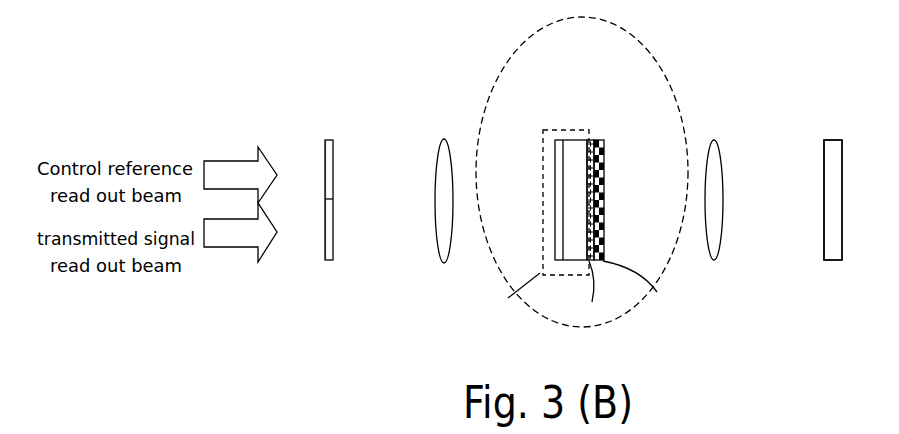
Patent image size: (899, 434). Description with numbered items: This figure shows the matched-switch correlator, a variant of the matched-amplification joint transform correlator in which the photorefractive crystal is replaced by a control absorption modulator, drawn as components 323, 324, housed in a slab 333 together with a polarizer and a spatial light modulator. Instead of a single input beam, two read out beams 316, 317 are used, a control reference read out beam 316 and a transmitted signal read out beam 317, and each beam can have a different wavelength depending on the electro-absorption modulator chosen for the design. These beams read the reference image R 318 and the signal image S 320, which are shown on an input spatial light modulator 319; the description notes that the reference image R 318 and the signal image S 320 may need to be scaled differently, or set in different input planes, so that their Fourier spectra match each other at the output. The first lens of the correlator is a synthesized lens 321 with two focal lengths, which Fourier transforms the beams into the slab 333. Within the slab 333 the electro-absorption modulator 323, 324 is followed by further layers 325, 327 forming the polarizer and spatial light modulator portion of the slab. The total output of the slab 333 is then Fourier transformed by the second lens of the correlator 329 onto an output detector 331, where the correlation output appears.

The read out beam 316 is at (217, 160).
The read out beam 317 is at (233, 243).
The reference image R 318 is at (305, 160).
The spatial light modulator (SLM) 319 is at (327, 140).
The signal image S 320 is at (307, 237).
The synthesized lens 321 is at (443, 140).
The control absorption modulator component 323 is at (555, 140).
The control absorption modulator component 324 is at (578, 140).
The electrode layer 325 is at (591, 137).
The polarizer SLM 327 is at (598, 138).
The second lens of the correlator 329 is at (713, 140).
The output detector 331 is at (827, 140).
The slab 333 is at (640, 42).